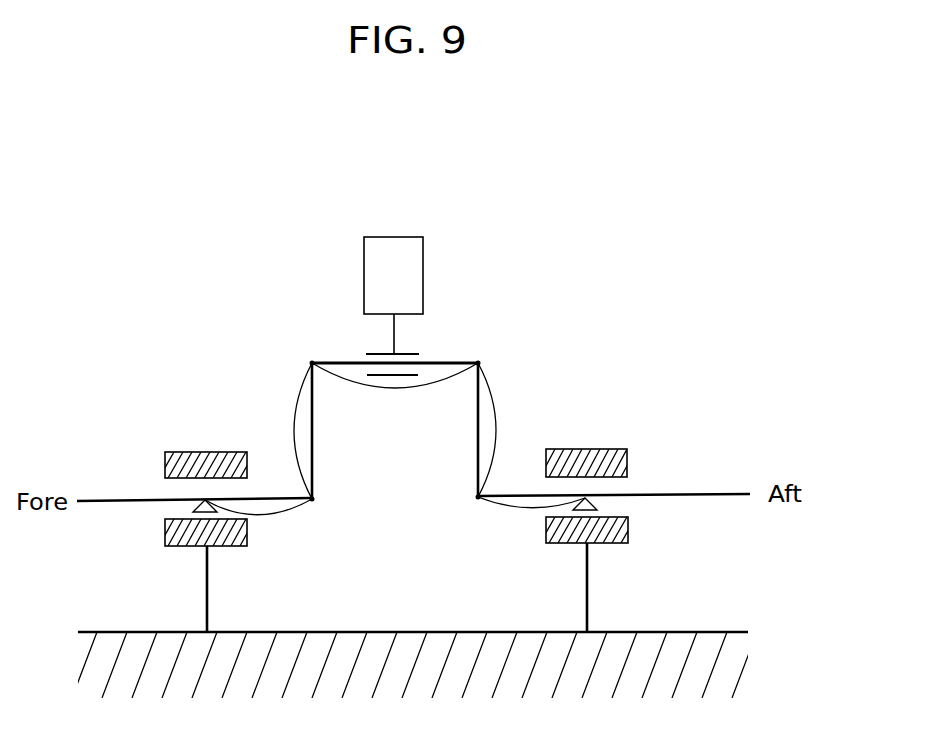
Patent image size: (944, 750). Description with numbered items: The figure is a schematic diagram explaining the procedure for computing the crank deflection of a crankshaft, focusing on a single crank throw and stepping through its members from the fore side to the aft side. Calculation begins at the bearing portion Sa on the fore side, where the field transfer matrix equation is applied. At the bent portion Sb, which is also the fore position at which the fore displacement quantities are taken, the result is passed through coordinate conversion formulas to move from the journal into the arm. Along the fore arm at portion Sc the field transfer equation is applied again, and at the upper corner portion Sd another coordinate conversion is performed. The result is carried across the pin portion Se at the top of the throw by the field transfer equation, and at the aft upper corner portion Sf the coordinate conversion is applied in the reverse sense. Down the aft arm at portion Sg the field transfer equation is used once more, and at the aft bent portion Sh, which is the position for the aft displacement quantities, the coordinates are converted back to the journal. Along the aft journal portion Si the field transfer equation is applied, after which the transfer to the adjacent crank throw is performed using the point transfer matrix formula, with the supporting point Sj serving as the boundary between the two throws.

The bearing portion Sa is at (276, 513).
The bent portion Sb is at (315, 501).
The portion Sc is at (294, 427).
The portion Sd is at (311, 361).
The portion Se is at (391, 390).
The portion Sf is at (480, 361).
The portion Sg is at (497, 427).
The portion Sh is at (475, 499).
The portion Si is at (514, 510).
The supporting point Sj is at (598, 504).